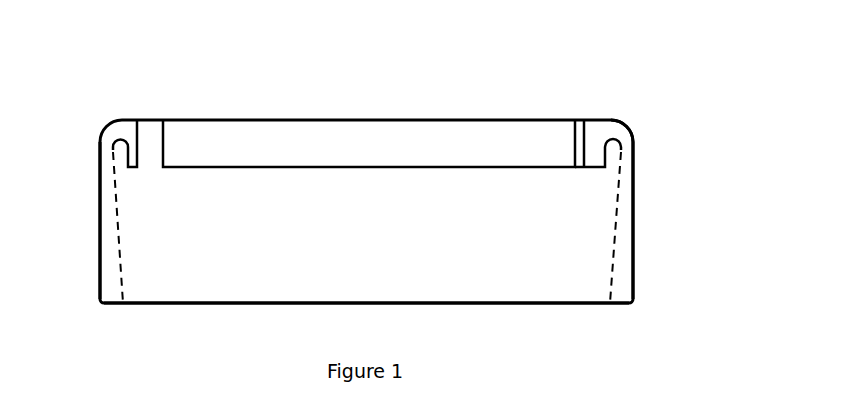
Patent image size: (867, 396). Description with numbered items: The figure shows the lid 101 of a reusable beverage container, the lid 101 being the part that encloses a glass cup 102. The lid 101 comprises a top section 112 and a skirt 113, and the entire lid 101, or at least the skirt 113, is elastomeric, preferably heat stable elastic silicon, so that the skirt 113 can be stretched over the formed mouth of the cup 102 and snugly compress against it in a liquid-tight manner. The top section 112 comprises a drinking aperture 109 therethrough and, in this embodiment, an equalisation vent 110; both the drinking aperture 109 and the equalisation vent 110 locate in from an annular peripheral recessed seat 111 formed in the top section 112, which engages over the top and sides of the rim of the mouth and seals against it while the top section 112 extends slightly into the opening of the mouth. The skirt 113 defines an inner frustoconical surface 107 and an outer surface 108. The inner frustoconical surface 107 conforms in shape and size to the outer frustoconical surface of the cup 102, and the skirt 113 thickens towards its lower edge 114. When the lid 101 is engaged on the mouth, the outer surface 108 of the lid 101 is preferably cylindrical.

The lid 101 is at (683, 70).
The glass cup 102 is at (683, 395).
The inner frustoconical surface 107 is at (120, 242).
The outer surface 108 is at (634, 222).
The drinking aperture 109 is at (147, 120).
The equalisation vent 110 is at (581, 120).
The annular peripheral recessed seat 111 is at (617, 136).
The top section 112 is at (409, 113).
The skirt 113 is at (95, 240).
The lower edge 114 is at (180, 304).